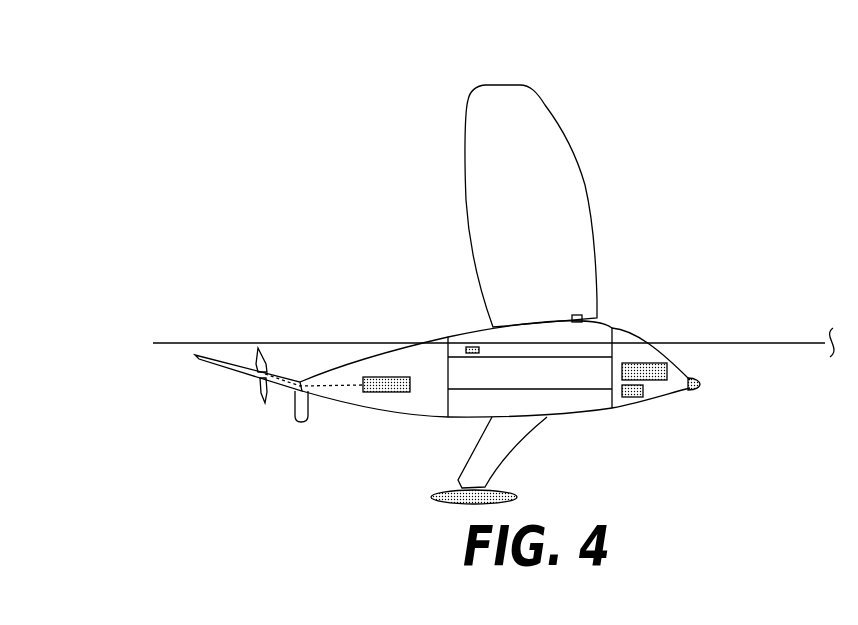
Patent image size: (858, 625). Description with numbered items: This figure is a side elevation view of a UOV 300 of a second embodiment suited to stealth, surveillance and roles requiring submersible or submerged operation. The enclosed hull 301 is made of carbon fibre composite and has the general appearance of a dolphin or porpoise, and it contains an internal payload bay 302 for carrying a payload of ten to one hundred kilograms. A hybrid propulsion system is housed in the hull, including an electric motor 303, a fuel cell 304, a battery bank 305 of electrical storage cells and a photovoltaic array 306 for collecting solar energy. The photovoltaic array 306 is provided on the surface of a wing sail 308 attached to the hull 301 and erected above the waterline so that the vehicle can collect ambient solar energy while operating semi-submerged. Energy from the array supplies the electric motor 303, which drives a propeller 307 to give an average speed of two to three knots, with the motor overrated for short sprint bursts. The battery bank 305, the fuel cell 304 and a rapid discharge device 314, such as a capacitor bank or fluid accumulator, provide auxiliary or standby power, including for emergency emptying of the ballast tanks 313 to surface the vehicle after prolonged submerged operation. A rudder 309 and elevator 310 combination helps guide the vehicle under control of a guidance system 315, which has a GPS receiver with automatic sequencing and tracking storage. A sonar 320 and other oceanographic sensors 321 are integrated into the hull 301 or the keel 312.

The UOV 300 is at (400, 133).
The enclosed hull 301 is at (627, 329).
The internal payload bay 302 is at (470, 346).
The electric motor 303 is at (383, 394).
The fuel cell 304 is at (667, 365).
The battery bank 305 is at (467, 372).
The photovoltaic array 306 is at (531, 206).
The propeller 307 is at (258, 395).
The wing sail 308 is at (570, 140).
The rudder 309 is at (297, 410).
The elevator 310 is at (220, 362).
The keel 312 is at (483, 432).
The ballast tanks 313 is at (557, 402).
The rapid discharge device 314 is at (632, 397).
The guidance system 315 is at (458, 340).
The sonar 320 is at (507, 487).
The oceanographic sensors 321 is at (700, 381).